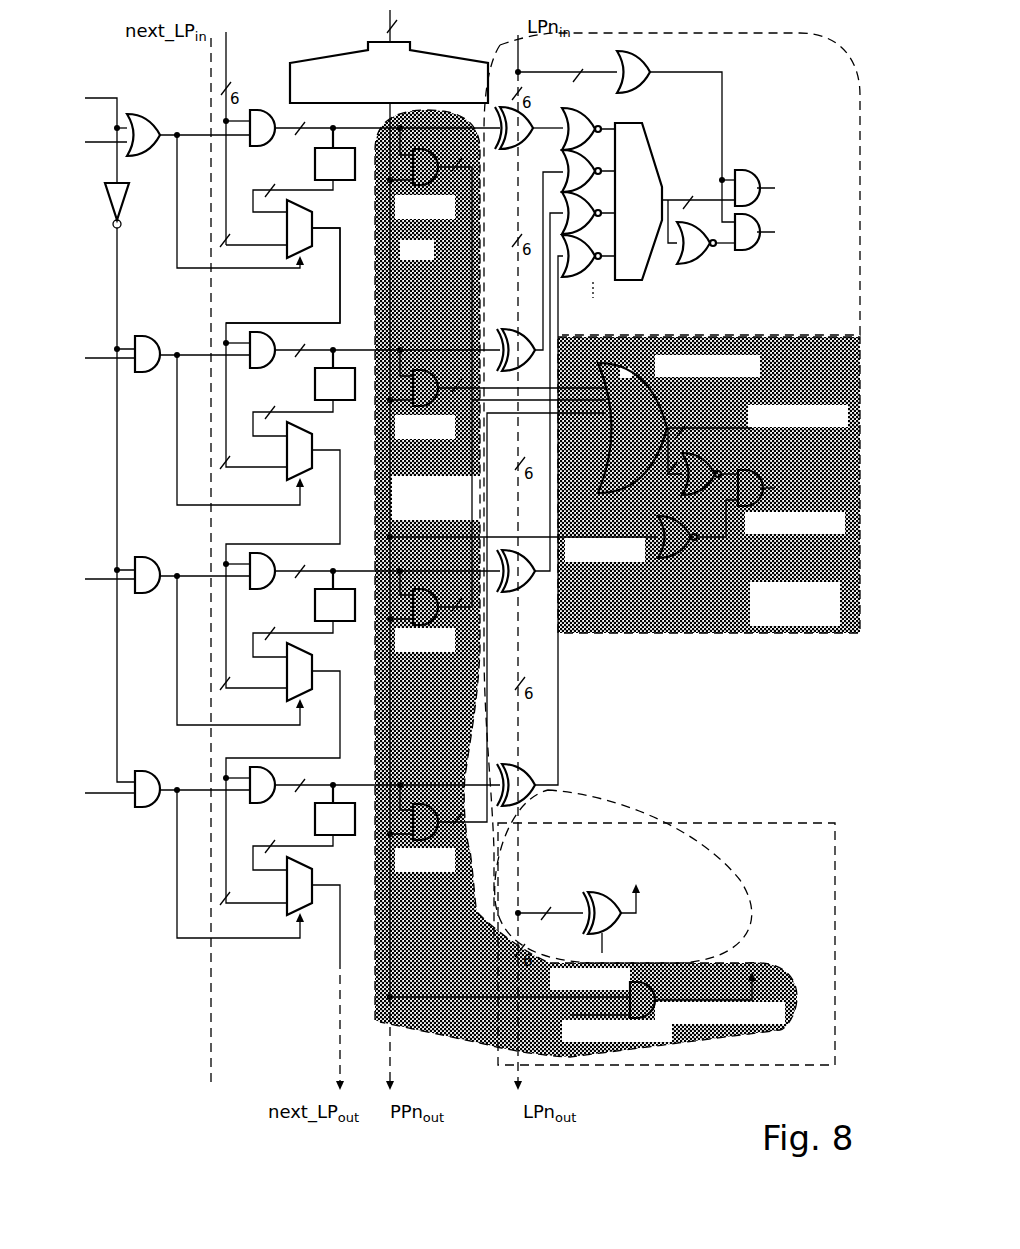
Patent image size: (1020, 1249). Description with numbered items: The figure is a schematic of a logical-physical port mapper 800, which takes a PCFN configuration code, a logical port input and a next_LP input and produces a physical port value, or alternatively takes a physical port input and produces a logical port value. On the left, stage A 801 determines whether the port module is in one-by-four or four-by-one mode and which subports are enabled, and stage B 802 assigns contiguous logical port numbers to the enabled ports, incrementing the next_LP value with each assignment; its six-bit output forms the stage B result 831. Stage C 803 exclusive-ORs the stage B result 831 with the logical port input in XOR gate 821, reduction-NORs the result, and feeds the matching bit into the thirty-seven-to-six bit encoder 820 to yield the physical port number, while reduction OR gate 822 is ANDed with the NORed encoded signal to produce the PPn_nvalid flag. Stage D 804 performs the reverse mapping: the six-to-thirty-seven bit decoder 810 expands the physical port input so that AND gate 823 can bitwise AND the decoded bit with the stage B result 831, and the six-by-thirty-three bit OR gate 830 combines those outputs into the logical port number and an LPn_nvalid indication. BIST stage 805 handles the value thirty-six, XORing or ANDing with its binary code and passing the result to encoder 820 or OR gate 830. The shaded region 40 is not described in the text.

The logical-physical port mapper 800 is at (448, 595).
The stage A 801 is at (143, 549).
The stage B 802 is at (266, 599).
The stage C 803 is at (672, 486).
The stage D 804 is at (596, 563).
The BIST stage 805 is at (607, 927).
The 6-to-37 bit decoder 810 is at (389, 56).
The 37-to-6 bit encoder 820 is at (683, 153).
The XOR gate 821 is at (476, 150).
The reduction OR gate 822 is at (636, 55).
The AND gate 823 is at (431, 152).
The 6x33 bit OR gate 830 is at (632, 428).
The stage B result 831 is at (347, 334).
The stippled region 40 is at (384, 255).